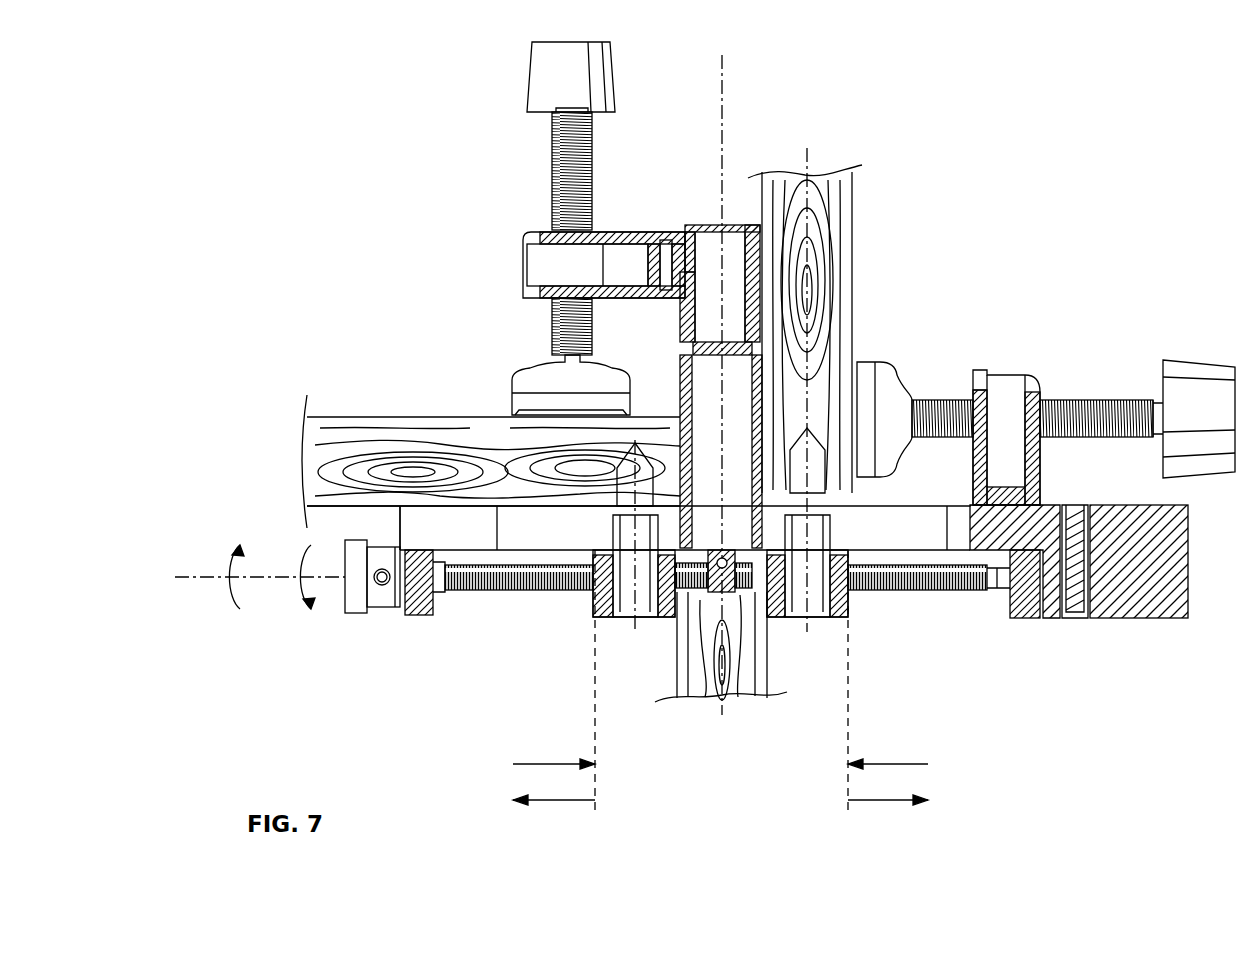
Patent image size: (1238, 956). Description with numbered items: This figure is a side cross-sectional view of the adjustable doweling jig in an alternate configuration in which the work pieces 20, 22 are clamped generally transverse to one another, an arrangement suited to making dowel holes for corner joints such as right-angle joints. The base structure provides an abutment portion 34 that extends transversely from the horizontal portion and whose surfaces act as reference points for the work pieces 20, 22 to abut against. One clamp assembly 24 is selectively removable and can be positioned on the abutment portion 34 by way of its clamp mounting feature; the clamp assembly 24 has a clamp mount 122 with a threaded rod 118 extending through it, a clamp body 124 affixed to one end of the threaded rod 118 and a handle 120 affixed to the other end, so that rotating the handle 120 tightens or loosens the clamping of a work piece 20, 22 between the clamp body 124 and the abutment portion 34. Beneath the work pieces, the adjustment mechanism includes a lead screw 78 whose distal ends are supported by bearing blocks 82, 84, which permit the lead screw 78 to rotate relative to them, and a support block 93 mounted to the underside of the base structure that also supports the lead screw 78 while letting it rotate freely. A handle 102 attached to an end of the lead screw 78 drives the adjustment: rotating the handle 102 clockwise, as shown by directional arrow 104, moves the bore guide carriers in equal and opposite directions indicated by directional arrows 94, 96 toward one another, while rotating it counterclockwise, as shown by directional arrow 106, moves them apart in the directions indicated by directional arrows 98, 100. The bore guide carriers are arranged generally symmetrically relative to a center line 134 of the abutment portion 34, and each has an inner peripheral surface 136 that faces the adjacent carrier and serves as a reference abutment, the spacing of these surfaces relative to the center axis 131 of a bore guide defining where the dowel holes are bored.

The work piece 20 is at (852, 256).
The work piece 22 is at (338, 417).
The clamp assembly 24 is at (1068, 356).
The abutment portion 34 is at (770, 498).
The lead screw 78 is at (495, 598).
The bearing block 82 is at (1022, 615).
The bearing block 84 is at (420, 612).
The support block 93 is at (718, 549).
The directional arrow 94 is at (548, 764).
The directional arrow 96 is at (892, 764).
The directional arrow 98 is at (548, 800).
The directional arrow 100 is at (892, 800).
The handle 102 is at (357, 612).
The directional arrow 104 is at (240, 610).
The directional arrow 106 is at (310, 610).
The threaded rod 118 is at (552, 167).
The handle 120 is at (527, 75).
The clamp mount 122 is at (523, 261).
The clamp body 124 is at (515, 380).
The center axis 131 is at (808, 150).
The center line 134 is at (718, 128).
The inner peripheral surface 136 is at (680, 692).